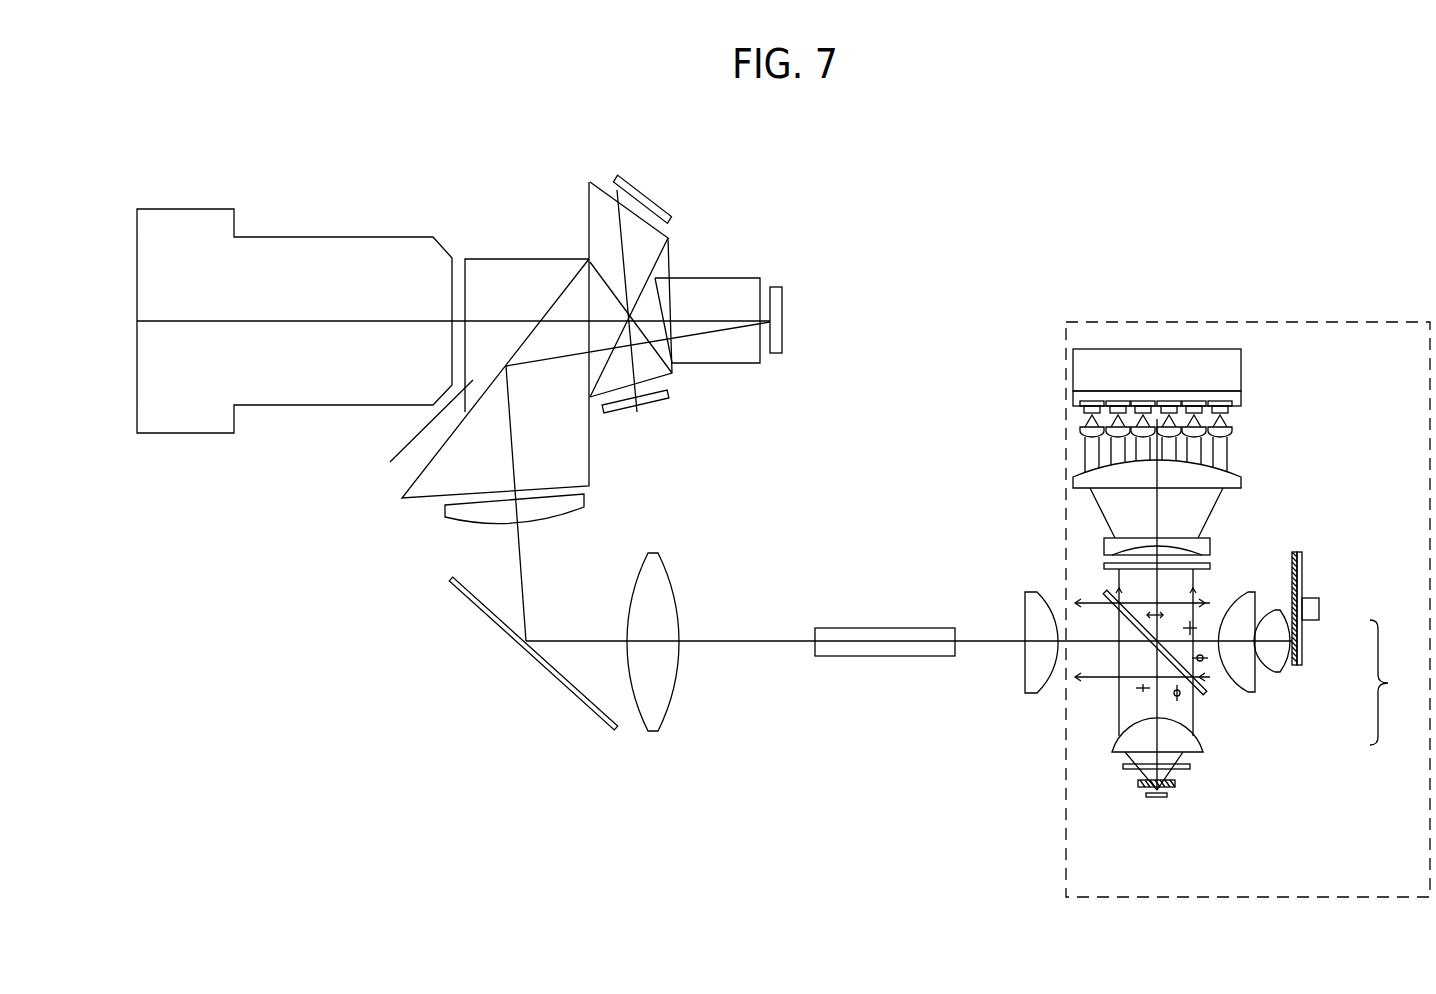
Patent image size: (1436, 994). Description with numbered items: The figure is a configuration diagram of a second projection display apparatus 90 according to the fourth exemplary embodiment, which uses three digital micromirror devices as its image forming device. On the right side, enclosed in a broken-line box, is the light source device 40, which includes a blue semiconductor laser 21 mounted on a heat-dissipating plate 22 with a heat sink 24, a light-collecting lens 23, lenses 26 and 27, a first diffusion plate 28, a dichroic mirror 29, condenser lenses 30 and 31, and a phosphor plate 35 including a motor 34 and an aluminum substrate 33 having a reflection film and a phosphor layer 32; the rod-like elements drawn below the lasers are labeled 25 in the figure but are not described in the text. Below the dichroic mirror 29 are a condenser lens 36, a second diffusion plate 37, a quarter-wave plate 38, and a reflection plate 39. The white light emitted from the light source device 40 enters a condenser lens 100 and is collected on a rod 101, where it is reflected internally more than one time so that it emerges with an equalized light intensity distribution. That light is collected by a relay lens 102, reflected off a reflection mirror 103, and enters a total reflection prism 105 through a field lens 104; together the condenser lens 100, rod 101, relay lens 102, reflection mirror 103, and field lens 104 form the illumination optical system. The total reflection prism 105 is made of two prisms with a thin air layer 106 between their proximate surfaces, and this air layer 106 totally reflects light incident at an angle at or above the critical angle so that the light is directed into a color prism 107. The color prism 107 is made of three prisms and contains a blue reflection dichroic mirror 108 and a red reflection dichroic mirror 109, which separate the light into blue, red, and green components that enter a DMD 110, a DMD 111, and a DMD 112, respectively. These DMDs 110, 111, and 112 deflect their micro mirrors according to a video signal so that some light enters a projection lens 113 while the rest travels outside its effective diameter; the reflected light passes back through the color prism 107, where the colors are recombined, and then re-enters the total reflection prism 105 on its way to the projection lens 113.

The blue semiconductor laser 21 is at (1230, 410).
The heat-dissipating plate 22 is at (1241, 399).
The light-collecting lens 23 is at (1230, 427).
The heat sink 24 is at (1241, 360).
The light guide rod 25 is at (1085, 443).
The lens 26 is at (1078, 487).
The lens 27 is at (1103, 537).
The first diffusion plate 28 is at (1103, 565).
The dichroic mirror 29 is at (1105, 592).
The condenser lens 30 is at (1245, 585).
The condenser lens 31 is at (1275, 610).
The phosphor layer 32 is at (1295, 667).
The aluminum substrate 33 is at (1300, 665).
The motor 34 is at (1307, 620).
The phosphor plate 35 is at (1395, 682).
The condenser lens 36 is at (1112, 745).
The second diffusion plate 37 is at (1127, 770).
The quarter-wave plate 38 is at (1172, 785).
The reflection plate 39 is at (1160, 797).
The light source device 40 is at (1123, 320).
The second projection display apparatus 90 is at (1066, 162).
The condenser lens 100 is at (1025, 678).
The rod 101 is at (898, 656).
The relay lens 102 is at (673, 687).
The reflection mirror 103 is at (587, 708).
The field lens 104 is at (586, 493).
The total reflection prism 105 is at (455, 452).
The air layer 106 is at (553, 295).
The color prism 107 is at (743, 353).
The blue reflection dichroic mirror 108 is at (655, 277).
The red reflection dichroic mirror 109 is at (660, 297).
The DMD 110 is at (670, 210).
The DMD 111 is at (670, 397).
The DMD 112 is at (783, 292).
The projection lens 113 is at (352, 235).